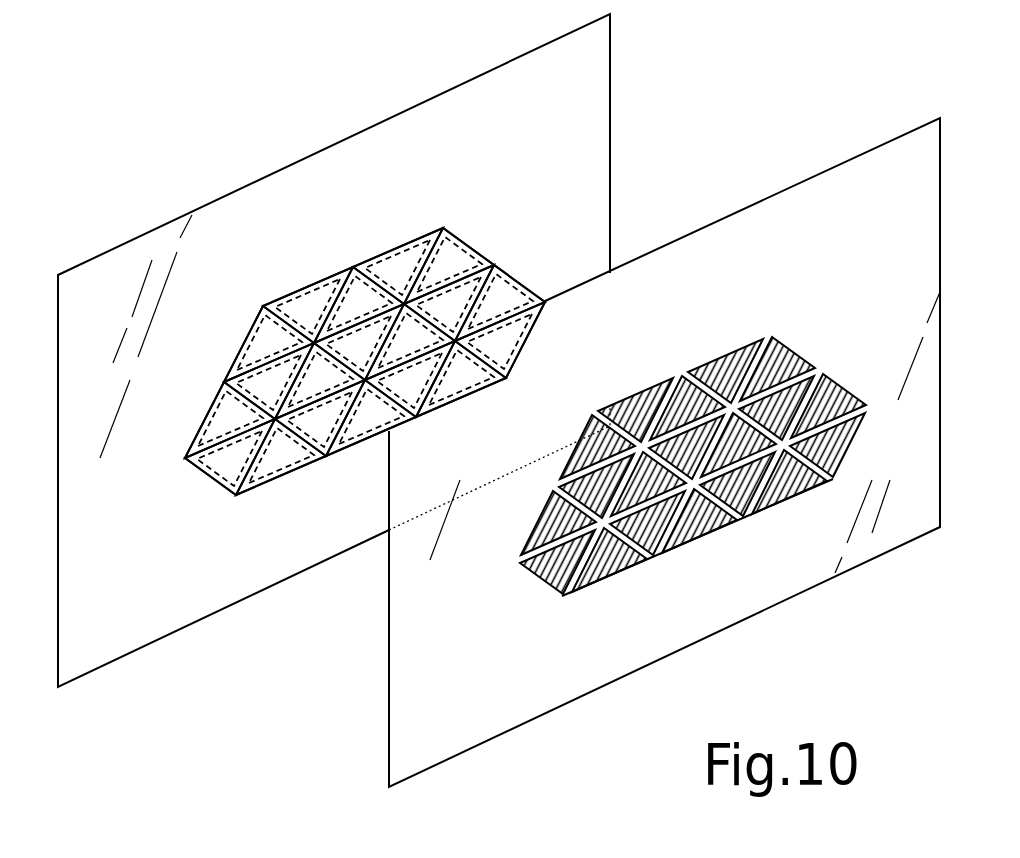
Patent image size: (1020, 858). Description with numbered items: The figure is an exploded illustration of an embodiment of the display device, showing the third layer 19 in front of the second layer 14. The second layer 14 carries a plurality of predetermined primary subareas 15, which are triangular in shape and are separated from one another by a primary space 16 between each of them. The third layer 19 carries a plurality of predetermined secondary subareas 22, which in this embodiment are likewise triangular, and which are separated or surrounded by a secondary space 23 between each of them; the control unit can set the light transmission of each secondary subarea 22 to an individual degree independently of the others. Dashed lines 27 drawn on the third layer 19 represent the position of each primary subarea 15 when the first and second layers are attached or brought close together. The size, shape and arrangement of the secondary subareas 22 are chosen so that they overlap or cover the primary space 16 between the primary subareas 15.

The second layer 14 is at (818, 190).
The primary subareas 15 is at (693, 508).
The primary space 16 is at (770, 503).
The third layer 19 is at (597, 125).
The secondary subareas 22 is at (357, 347).
The secondary space 23 is at (472, 248).
The dashed lines 27 is at (400, 250).